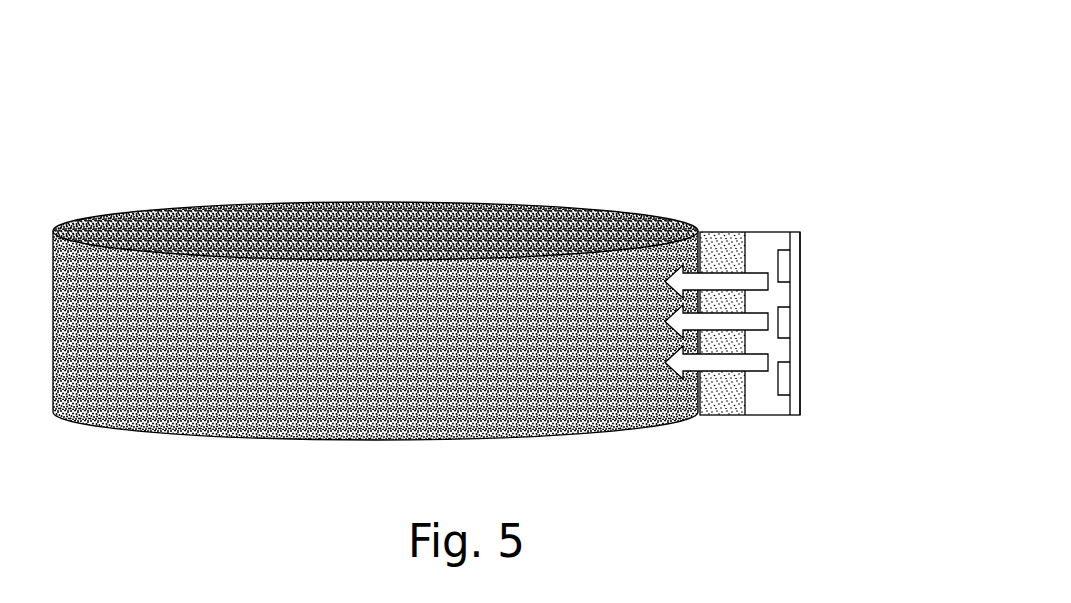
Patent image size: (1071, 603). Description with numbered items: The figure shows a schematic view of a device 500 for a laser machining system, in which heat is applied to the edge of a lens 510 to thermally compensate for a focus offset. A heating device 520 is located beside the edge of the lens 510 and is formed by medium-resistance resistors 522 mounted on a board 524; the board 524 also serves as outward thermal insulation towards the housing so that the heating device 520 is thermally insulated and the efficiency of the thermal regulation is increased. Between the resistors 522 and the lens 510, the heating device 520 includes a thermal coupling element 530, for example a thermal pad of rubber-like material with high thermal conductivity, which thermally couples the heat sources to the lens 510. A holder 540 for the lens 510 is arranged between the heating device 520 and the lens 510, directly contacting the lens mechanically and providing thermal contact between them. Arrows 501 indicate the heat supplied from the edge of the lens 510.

The device 500 is at (487, 264).
The lens 510 is at (378, 218).
The thermal coupling element 530 is at (787, 319).
The holder 540 is at (730, 416).
The arrows 501 is at (728, 364).
The heating device 520 is at (850, 303).
The medium-resistance resistors 522 is at (783, 246).
The board 524 is at (802, 383).